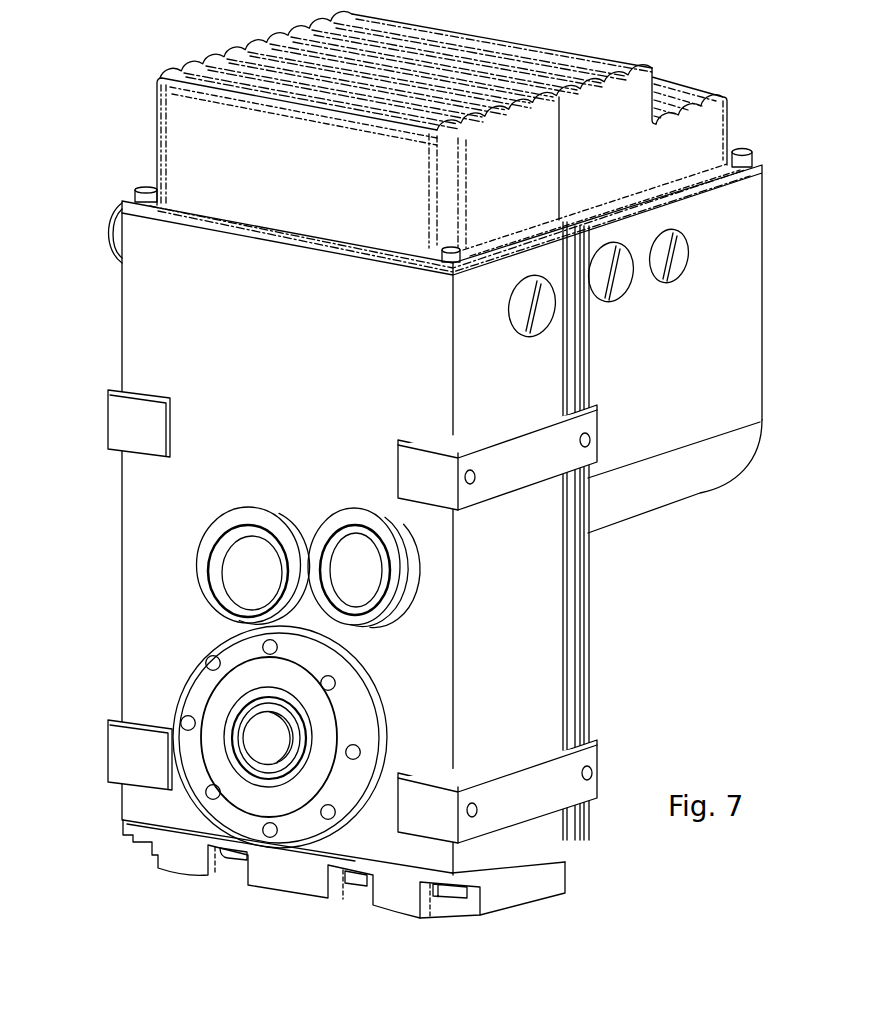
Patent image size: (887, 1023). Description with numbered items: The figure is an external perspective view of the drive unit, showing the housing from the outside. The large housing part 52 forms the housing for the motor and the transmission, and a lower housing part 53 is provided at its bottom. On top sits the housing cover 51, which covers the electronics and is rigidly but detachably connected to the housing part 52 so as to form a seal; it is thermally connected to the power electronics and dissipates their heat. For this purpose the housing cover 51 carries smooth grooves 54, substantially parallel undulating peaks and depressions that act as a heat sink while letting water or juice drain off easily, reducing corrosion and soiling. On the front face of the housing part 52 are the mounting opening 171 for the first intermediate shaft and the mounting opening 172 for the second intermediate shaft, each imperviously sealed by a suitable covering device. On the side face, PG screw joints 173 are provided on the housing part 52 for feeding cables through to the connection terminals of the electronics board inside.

The housing cover 51 is at (165, 139).
The housing part 52 is at (130, 315).
The lower housing part 53 is at (187, 848).
The smooth grooves 54 is at (272, 33).
The mounting opening 171 is at (337, 547).
The mounting opening 172 is at (225, 567).
The PG screw joints 173 is at (545, 310).